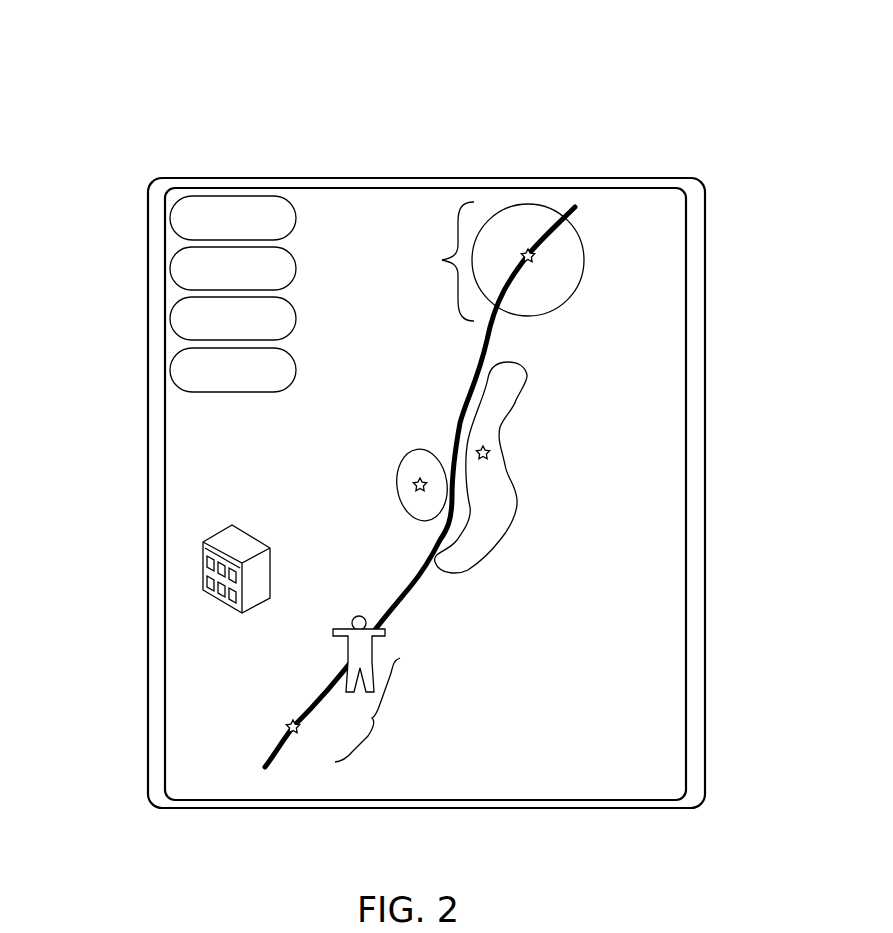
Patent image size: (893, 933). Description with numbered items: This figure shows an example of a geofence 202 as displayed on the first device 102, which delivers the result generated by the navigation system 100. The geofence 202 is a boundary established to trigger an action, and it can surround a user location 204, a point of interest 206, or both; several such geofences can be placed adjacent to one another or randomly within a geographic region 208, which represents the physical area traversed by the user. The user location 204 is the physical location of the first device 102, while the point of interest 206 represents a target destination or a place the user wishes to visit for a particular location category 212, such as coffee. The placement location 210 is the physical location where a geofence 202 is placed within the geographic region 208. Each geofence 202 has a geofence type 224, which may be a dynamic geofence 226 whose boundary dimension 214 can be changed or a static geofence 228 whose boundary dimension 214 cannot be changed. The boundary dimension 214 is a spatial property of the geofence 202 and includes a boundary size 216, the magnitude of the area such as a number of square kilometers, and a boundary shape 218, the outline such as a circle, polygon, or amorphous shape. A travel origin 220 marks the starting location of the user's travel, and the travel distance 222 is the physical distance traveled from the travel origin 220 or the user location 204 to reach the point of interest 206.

The navigation system 100 is at (165, 50).
The first device 102 is at (223, 177).
The geofence 202 is at (397, 478).
The user location 204 is at (360, 653).
The point of interest 206 is at (533, 262).
The geographic region 208 is at (662, 232).
The placement location 210 is at (487, 447).
The location category 212 is at (182, 213).
The boundary dimension 214 is at (442, 260).
The boundary size 216 is at (185, 253).
The boundary shape 218 is at (183, 313).
The travel origin 220 is at (285, 725).
The travel distance 222 is at (375, 718).
The geofence type 224 is at (183, 373).
The dynamic geofence 226 is at (517, 518).
The static geofence 228 is at (585, 242).